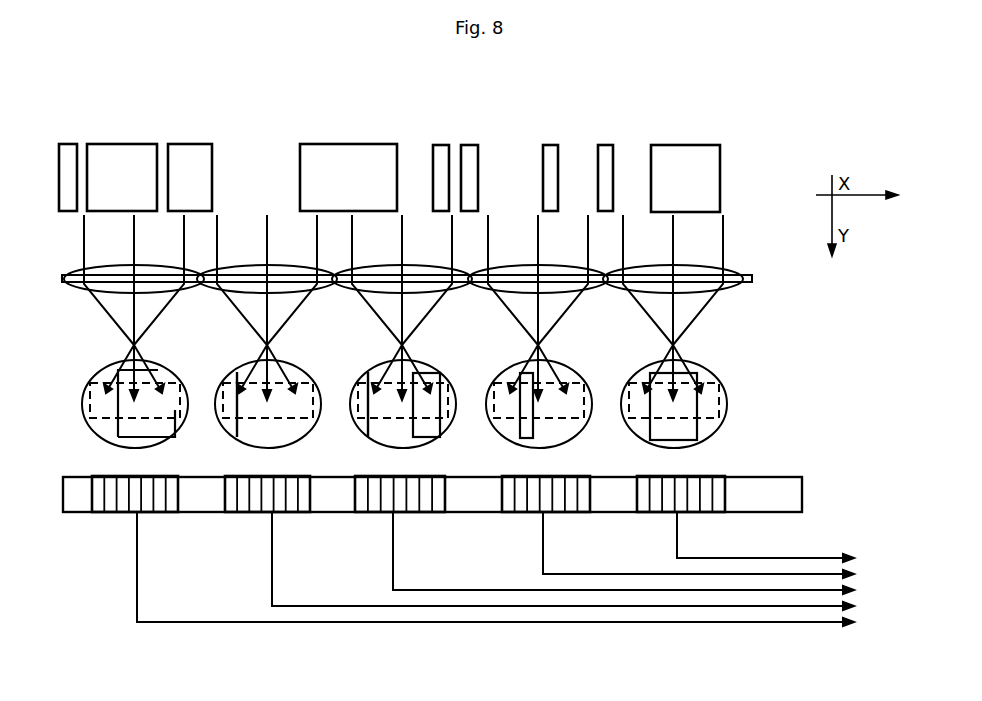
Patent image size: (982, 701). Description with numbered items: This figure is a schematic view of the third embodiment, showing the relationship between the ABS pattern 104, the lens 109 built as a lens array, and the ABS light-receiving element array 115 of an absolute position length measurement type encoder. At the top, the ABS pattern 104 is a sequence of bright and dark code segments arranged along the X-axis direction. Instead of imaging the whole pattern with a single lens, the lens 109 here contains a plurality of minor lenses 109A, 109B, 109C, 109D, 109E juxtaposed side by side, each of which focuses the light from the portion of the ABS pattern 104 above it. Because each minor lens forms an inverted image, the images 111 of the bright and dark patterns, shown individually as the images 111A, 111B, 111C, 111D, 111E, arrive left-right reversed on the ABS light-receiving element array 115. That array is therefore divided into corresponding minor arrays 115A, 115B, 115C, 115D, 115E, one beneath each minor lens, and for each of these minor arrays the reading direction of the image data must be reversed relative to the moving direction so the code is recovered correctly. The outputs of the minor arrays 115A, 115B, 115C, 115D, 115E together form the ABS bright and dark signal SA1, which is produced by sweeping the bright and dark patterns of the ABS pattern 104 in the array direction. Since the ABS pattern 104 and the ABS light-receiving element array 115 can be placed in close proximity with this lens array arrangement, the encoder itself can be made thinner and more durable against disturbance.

The ABS pattern 104 is at (730, 171).
The lens 109 is at (442, 292).
The minor lens 109A is at (184, 288).
The minor lens 109B is at (317, 288).
The minor lens 109C is at (452, 288).
The minor lens 109D is at (588, 288).
The minor lens 109E is at (723, 288).
The images of bright and dark patterns 111 is at (444, 411).
The image of bright and dark pattern 111A is at (161, 428).
The image of bright and dark pattern 111B is at (294, 428).
The image of bright and dark pattern 111C is at (429, 428).
The image of bright and dark pattern 111D is at (565, 428).
The image of bright and dark pattern 111E is at (700, 428).
The ABS light-receiving element array 115 is at (451, 507).
The minor array 115A is at (157, 500).
The minor array 115B is at (292, 510).
The minor array 115C is at (413, 505).
The minor array 115D is at (555, 505).
The minor array 115E is at (712, 512).
The ABS bright and dark signal SA1 is at (808, 622).